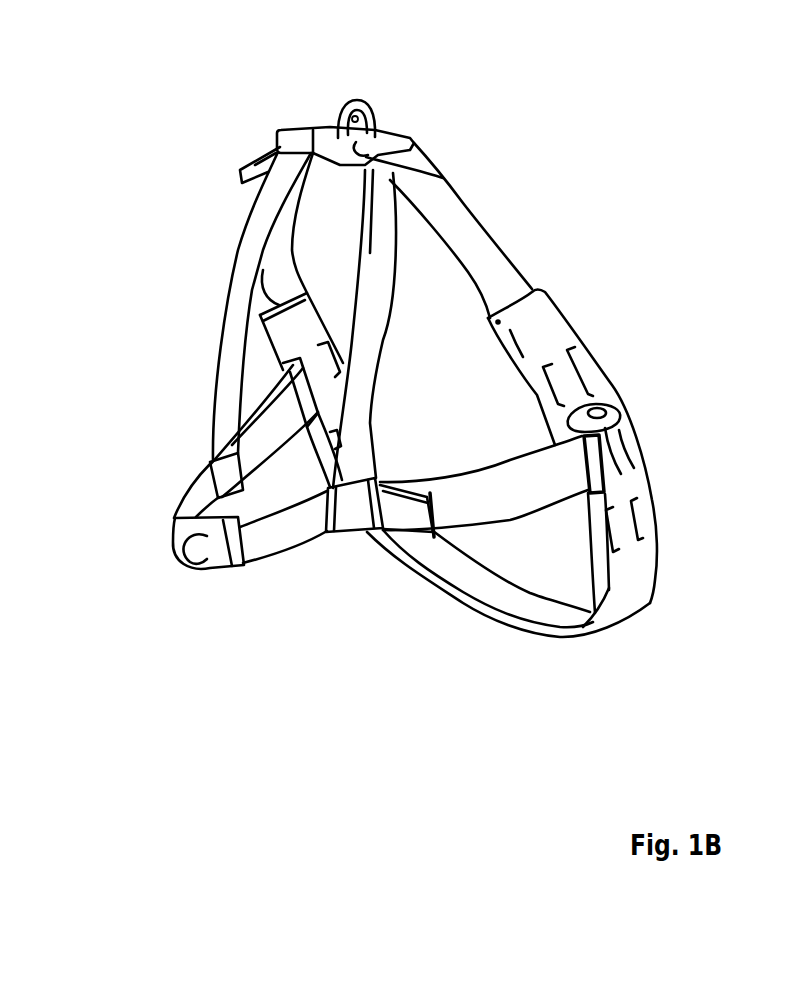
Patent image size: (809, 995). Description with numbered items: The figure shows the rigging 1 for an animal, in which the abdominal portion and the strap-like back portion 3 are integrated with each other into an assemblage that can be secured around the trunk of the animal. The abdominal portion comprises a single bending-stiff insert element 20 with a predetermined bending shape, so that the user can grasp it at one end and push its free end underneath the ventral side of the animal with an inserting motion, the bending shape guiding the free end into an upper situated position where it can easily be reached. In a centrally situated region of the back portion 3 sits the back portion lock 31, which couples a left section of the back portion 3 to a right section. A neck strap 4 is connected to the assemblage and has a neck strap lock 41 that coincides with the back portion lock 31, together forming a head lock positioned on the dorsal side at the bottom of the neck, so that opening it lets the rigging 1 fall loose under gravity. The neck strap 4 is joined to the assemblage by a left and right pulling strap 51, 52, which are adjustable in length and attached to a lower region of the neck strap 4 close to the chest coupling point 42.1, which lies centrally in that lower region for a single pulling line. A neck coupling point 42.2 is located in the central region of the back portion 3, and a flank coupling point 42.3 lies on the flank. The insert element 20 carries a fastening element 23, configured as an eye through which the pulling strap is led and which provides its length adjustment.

The rigging 1 is at (614, 209).
The back portion 3 is at (450, 206).
The neck strap 4 is at (248, 250).
The insert element 20 is at (590, 372).
The fastening element 23 is at (622, 455).
The back portion lock 31 is at (317, 130).
The neck strap lock 41 is at (317, 130).
The chest coupling point 42.1 is at (175, 567).
The neck coupling point 42.2 is at (378, 101).
The flank coupling point 42.3 is at (625, 405).
The pulling strap 51 is at (522, 493).
The pulling strap 52 is at (262, 432).